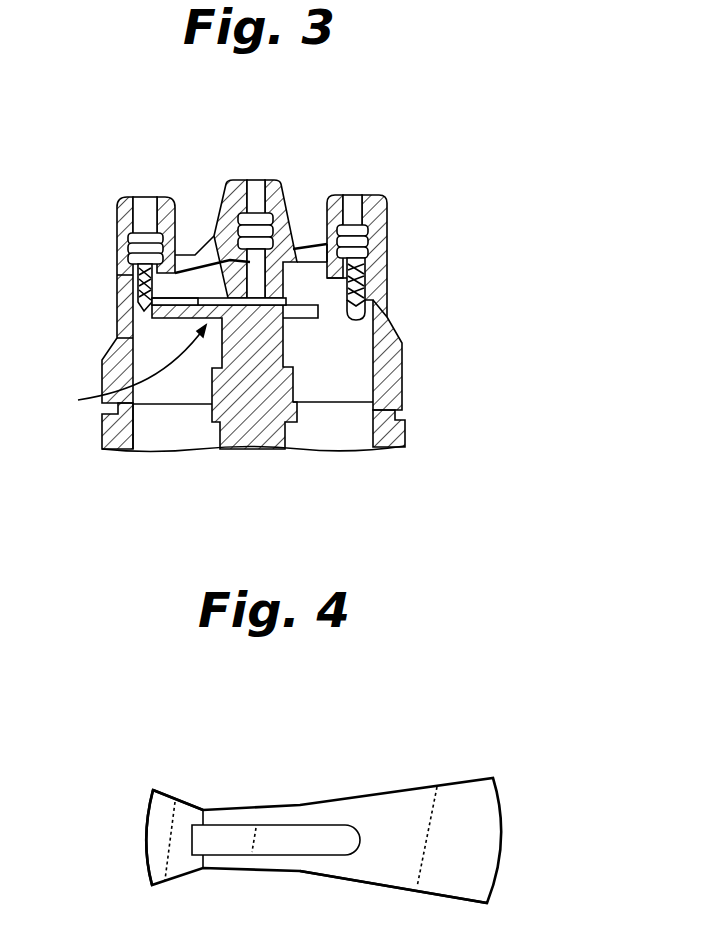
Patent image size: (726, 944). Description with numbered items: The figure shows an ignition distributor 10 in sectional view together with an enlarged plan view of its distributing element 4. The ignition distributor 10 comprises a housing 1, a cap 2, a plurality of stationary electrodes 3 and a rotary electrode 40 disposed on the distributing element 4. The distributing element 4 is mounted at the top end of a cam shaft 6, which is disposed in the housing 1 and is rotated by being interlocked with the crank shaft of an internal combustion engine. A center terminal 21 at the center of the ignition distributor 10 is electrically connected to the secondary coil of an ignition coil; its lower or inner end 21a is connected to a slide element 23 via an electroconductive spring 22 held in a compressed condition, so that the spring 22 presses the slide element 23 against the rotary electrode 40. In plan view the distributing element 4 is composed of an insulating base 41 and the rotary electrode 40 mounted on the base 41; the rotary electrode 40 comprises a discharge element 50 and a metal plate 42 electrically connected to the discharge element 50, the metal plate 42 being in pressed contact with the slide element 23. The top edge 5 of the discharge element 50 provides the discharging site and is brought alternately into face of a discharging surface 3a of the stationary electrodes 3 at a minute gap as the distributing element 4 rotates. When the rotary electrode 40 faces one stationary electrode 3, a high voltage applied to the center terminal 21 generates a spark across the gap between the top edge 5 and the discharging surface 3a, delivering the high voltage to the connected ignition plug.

In FIG. 3, the housing 1 is at (398, 431).
In FIG. 3, the cap 2 is at (394, 378).
In FIG. 3, the stationary electrodes 3 is at (375, 290).
In FIG. 3, the discharging surface 3a is at (395, 318).
In FIG. 3, the distributing element 4 is at (131, 371).
In FIG. 4, the distributing element 4 is at (390, 790).
In FIG. 4, the top edge 5 is at (148, 822).
In FIG. 3, the cam shaft 6 is at (268, 420).
In FIG. 3, the ignition distributor 10 is at (420, 203).
In FIG. 3, the center terminal 21 is at (258, 180).
In FIG. 3, the lower or inner end 21a is at (289, 268).
In FIG. 3, the electroconductive spring 22 is at (325, 196).
In FIG. 3, the slide element 23 is at (214, 298).
In FIG. 3, the rotary electrode 40 is at (117, 243).
In FIG. 4, the rotary electrode 40 is at (170, 805).
In FIG. 3, the insulating base 41 is at (117, 342).
In FIG. 4, the insulating base 41 is at (373, 870).
In FIG. 3, the metal plate 42 is at (197, 297).
In FIG. 4, the metal plate 42 is at (326, 845).
In FIG. 3, the discharge element 50 is at (117, 275).
In FIG. 4, the discharge element 50 is at (160, 860).